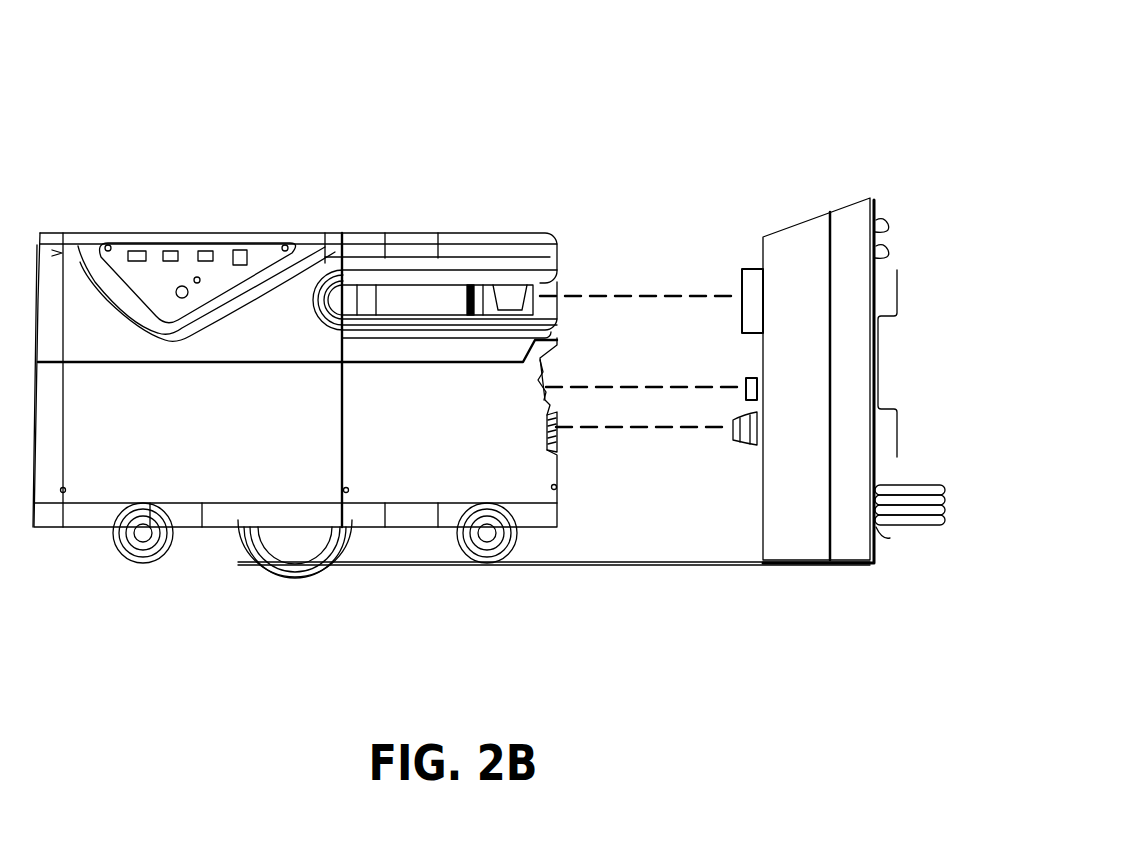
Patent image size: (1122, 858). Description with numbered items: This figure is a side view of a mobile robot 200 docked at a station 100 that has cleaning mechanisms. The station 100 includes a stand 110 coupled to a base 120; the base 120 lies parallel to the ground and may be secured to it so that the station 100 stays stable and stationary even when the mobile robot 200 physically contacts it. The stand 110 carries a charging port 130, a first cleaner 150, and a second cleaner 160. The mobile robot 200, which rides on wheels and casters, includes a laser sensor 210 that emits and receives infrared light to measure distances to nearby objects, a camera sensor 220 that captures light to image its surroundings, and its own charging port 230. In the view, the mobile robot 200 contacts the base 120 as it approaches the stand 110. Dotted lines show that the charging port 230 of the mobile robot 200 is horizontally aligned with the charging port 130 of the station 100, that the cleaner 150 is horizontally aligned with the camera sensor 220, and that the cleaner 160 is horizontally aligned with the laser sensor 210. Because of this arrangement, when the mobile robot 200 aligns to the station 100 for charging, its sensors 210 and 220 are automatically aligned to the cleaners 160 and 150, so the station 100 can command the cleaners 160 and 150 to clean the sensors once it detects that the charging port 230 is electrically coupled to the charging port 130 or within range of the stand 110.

The station 100 is at (862, 142).
The stand 110 is at (795, 225).
The base 120 is at (415, 563).
The charging port 130 is at (740, 435).
The first cleaner 150 is at (742, 385).
The second cleaner 160 is at (740, 290).
The mobile robot 200 is at (200, 233).
The laser sensor 210 is at (500, 290).
The camera sensor 220 is at (543, 388).
The charging port 230 is at (548, 430).